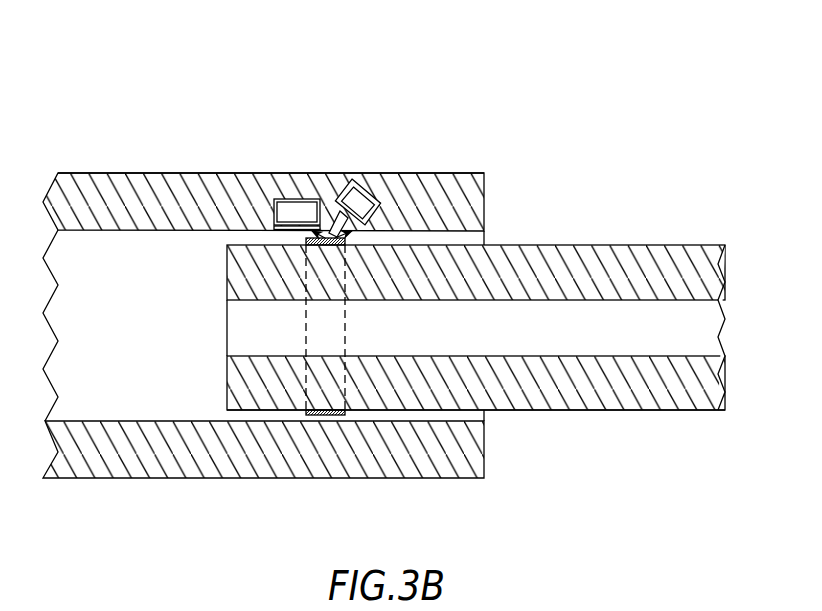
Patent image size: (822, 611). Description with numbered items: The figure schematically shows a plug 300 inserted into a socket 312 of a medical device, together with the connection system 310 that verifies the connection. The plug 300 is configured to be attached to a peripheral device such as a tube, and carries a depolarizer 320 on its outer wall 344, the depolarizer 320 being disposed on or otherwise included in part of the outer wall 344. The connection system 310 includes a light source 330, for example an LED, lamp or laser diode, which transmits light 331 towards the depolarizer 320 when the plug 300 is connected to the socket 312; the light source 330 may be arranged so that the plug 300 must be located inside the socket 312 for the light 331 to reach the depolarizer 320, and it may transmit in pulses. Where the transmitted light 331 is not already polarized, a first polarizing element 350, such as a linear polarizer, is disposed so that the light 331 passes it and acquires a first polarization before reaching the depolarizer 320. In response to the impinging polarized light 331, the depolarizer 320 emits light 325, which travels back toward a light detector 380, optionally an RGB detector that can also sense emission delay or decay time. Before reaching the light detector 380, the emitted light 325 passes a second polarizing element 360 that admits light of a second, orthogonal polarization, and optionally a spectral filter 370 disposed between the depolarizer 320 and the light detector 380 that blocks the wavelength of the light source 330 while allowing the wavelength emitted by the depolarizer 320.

The plug 300 is at (617, 135).
The connection system 310 is at (119, 63).
The socket 312 is at (98, 173).
The depolarizer 320 is at (327, 415).
The emitted light 325 is at (342, 236).
The light source 330 is at (381, 190).
The transmitted light 331 is at (326, 222).
The outer wall 344 is at (587, 410).
The first polarizing element 350 is at (358, 190).
The second polarizing element 360 is at (278, 229).
The spectral filter 370 is at (308, 231).
The light detector 380 is at (307, 199).